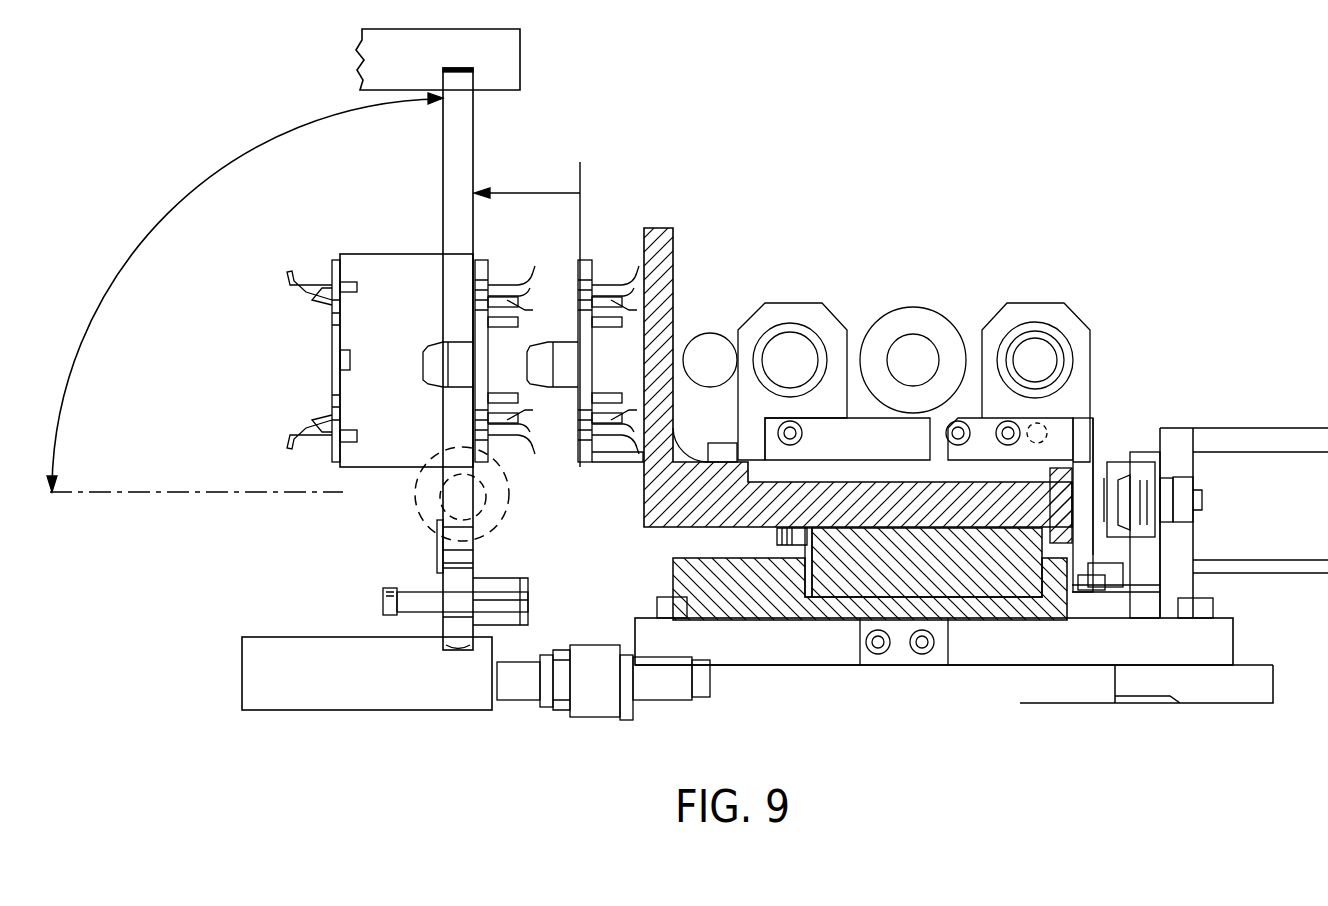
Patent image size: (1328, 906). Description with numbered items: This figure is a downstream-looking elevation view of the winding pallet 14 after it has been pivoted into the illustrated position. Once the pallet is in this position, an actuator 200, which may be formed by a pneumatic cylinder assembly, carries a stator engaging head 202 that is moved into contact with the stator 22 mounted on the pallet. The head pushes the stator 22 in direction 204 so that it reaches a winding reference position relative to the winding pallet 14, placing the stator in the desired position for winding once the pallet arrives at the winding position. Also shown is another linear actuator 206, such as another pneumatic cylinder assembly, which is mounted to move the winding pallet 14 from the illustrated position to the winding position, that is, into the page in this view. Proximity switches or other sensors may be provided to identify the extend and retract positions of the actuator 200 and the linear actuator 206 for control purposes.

The winding pallet 14 is at (473, 97).
The stator 22 is at (360, 252).
The actuator 200 is at (652, 530).
The stator engaging head 202 is at (661, 228).
The direction 204 is at (536, 193).
The linear actuator 206 is at (421, 511).